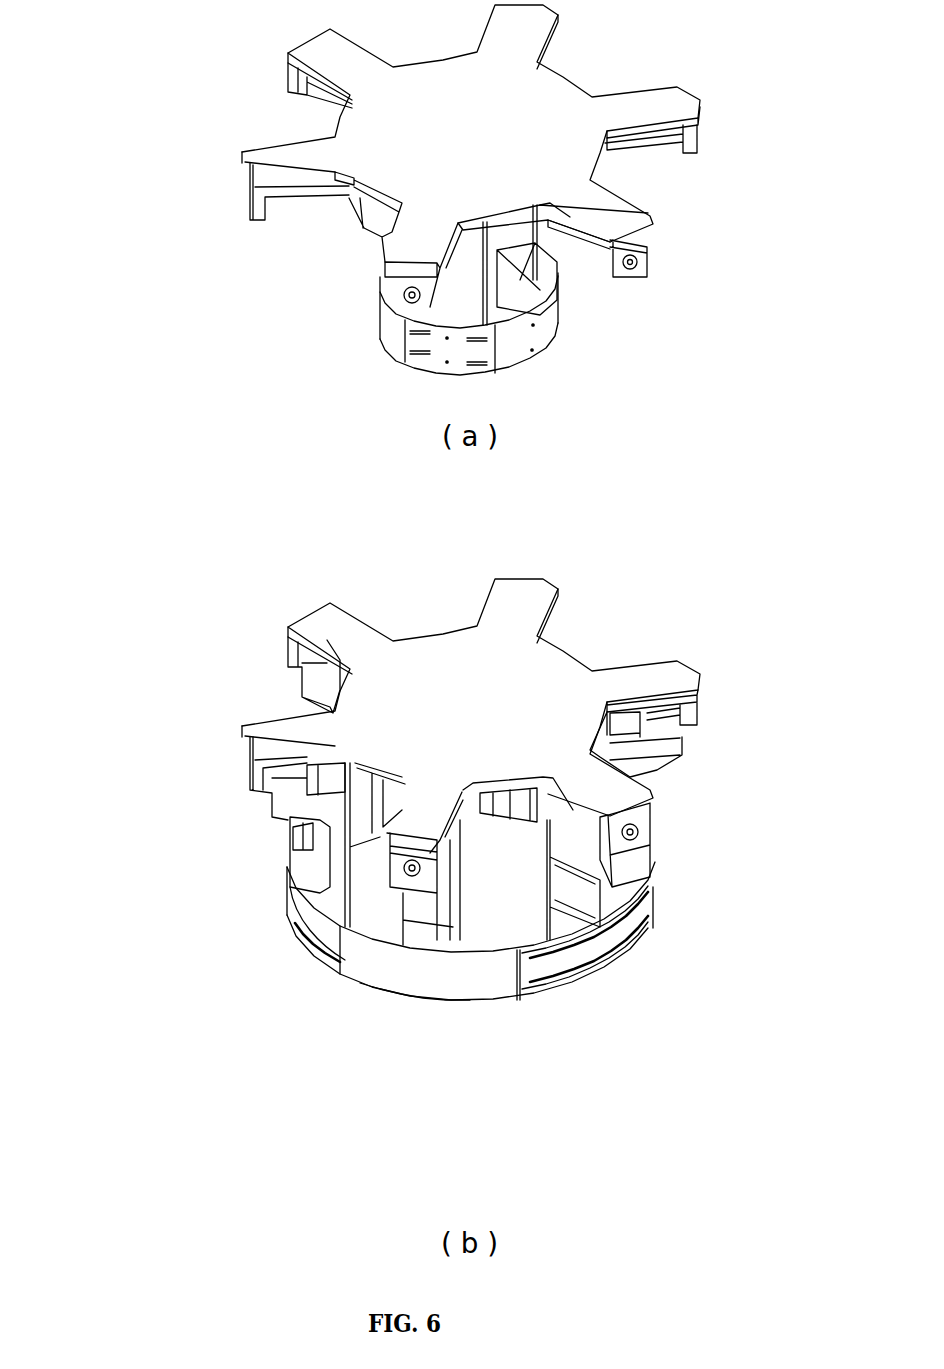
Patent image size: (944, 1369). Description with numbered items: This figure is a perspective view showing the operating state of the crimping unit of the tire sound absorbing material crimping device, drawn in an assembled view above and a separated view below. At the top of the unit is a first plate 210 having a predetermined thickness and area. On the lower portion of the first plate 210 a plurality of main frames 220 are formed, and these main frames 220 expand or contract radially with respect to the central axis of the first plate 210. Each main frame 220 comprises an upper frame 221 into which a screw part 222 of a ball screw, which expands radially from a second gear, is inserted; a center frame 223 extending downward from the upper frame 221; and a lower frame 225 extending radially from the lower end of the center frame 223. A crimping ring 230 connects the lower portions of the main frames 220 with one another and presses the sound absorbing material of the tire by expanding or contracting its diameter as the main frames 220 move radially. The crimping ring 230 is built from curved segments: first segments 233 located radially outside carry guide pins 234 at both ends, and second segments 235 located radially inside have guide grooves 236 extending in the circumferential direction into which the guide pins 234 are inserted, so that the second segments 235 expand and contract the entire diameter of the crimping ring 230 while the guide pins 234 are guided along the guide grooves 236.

The first plate 210 is at (677, 110).
The main frame 220 is at (560, 312).
The upper frame 221 is at (253, 790).
The screw part 222 is at (273, 163).
The center frame 223 is at (290, 877).
The lower frame 225 is at (290, 883).
The crimping ring 230 is at (488, 374).
The first segment 233 is at (397, 988).
The guide pin 234 is at (513, 997).
The second segment 235 is at (603, 940).
The guide groove 236 is at (540, 963).